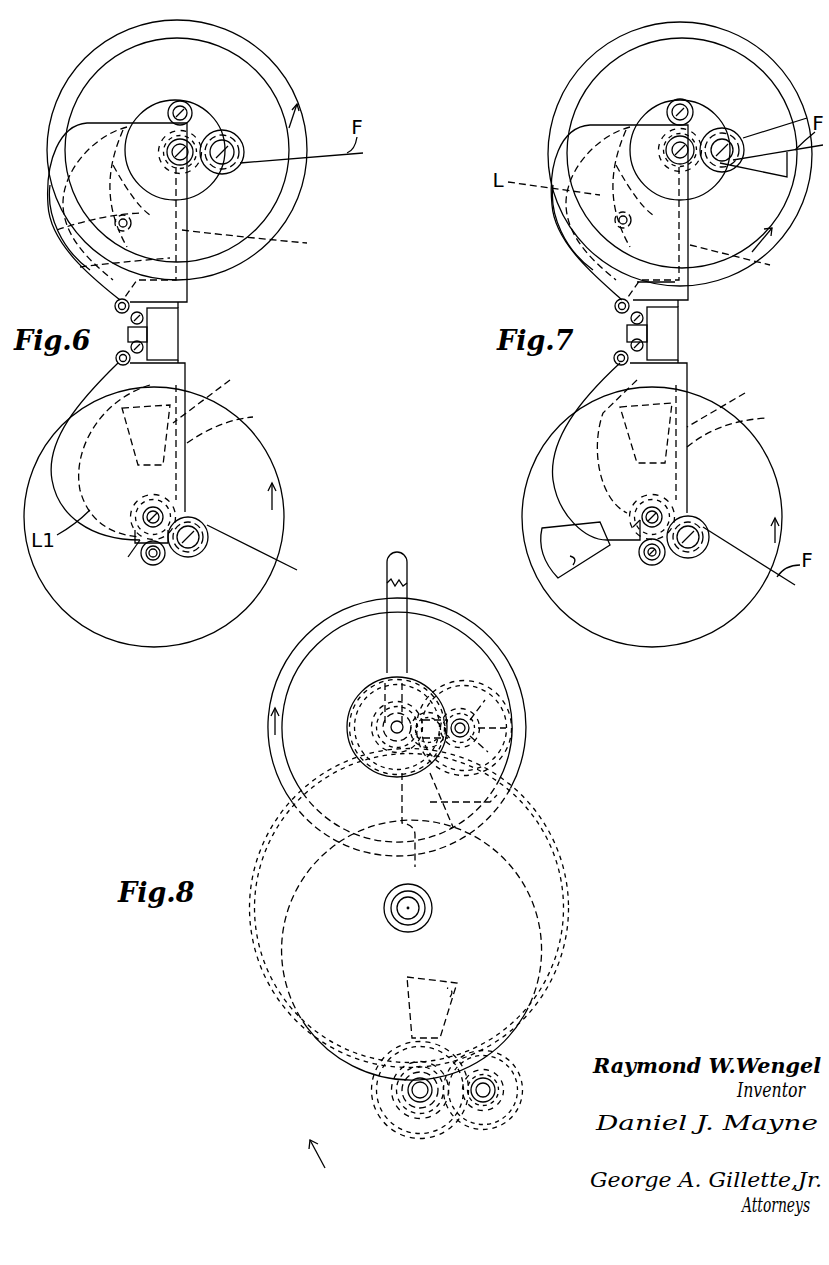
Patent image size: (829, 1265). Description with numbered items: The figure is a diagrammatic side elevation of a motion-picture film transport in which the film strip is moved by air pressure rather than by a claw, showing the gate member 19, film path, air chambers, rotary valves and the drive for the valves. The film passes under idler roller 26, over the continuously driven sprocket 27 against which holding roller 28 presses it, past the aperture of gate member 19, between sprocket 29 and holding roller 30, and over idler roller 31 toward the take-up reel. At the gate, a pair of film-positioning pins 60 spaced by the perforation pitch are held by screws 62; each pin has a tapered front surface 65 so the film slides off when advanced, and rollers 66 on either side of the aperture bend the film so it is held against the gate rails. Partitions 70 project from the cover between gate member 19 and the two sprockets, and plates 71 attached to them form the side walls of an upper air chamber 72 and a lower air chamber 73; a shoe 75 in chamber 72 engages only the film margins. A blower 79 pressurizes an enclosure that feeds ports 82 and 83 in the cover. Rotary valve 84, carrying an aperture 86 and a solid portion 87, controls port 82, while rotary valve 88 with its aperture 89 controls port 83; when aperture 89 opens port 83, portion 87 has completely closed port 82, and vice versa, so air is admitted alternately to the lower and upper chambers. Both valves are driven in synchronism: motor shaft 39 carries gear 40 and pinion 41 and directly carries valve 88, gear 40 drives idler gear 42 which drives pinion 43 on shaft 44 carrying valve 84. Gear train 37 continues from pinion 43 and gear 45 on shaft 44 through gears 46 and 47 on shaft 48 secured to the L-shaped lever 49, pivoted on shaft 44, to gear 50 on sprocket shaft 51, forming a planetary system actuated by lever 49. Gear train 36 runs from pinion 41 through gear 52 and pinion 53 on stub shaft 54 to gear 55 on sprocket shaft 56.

In FIG. 6, the gate member 19 is at (178, 338).
In FIG. 7, the gate member 19 is at (683, 342).
In FIG. 6, the idler roller 26 is at (238, 137).
In FIG. 7, the idler roller 26 is at (730, 137).
In FIG. 6, the sprocket 27 is at (193, 142).
In FIG. 7, the sprocket 27 is at (693, 140).
In FIG. 6, the holding roller 28 is at (187, 107).
In FIG. 7, the holding roller 28 is at (690, 107).
In FIG. 7, the sprocket 29 is at (648, 558).
In FIG. 6, the holding roller 30 is at (153, 567).
In FIG. 7, the holding roller 30 is at (657, 560).
In FIG. 6, the idler roller 31 is at (200, 553).
In FIG. 7, the idler roller 31 is at (703, 522).
In FIG. 8, the gear train 36 is at (367, 1097).
In FIG. 8, the gear train 37 is at (433, 680).
In FIG. 8, the motor shaft 39 is at (420, 1093).
In FIG. 8, the gear 40 is at (427, 1113).
In FIG. 8, the pinion 41 is at (382, 1117).
In FIG. 8, the idler gear 42 is at (567, 892).
In FIG. 8, the pinion 43 is at (373, 727).
In FIG. 8, the shaft 44 is at (388, 713).
In FIG. 8, the gear 45 is at (407, 680).
In FIG. 8, the gear 46 is at (507, 737).
In FIG. 8, the gear 47 is at (510, 697).
In FIG. 8, the shaft 48 is at (507, 763).
In FIG. 8, the L-shaped lever 49 is at (397, 630).
In FIG. 8, the gear 50 is at (353, 697).
In FIG. 6, the sprocket shaft 51 is at (213, 192).
In FIG. 7, the sprocket shaft 51 is at (687, 170).
In FIG. 8, the gear 52 is at (530, 1118).
In FIG. 8, the pinion 53 is at (497, 1088).
In FIG. 8, the stub shaft 54 is at (483, 1093).
In FIG. 8, the gear 55 is at (373, 1073).
In FIG. 6, the sprocket shaft 56 is at (128, 557).
In FIG. 7, the sprocket shaft 56 is at (633, 527).
In FIG. 7, the film-positioning pins 60 is at (627, 320).
In FIG. 6, the screws 62 is at (150, 335).
In FIG. 7, the screws 62 is at (665, 340).
In FIG. 6, the front surface 65 is at (128, 335).
In FIG. 6, the rollers 66 is at (115, 305).
In FIG. 7, the rollers 66 is at (612, 305).
In FIG. 6, the partitions 70 is at (253, 417).
In FIG. 7, the partitions 70 is at (742, 346).
In FIG. 6, the plates 71 is at (55, 192).
In FIG. 7, the plates 71 is at (552, 210).
In FIG. 6, the air chamber 72 is at (53, 213).
In FIG. 7, the air chamber 72 is at (552, 225).
In FIG. 6, the air chamber 73 is at (53, 467).
In FIG. 7, the air chamber 73 is at (550, 473).
In FIG. 6, the shoe 75 is at (113, 165).
In FIG. 7, the shoe 75 is at (560, 160).
In FIG. 6, the blower 79 is at (167, 487).
In FIG. 7, the blower 79 is at (652, 517).
In FIG. 6, the port 82 is at (80, 267).
In FIG. 7, the port 82 is at (640, 290).
In FIG. 8, the port 82 is at (417, 865).
In FIG. 6, the port 83 is at (230, 382).
In FIG. 7, the port 83 is at (729, 403).
In FIG. 8, the port 83 is at (452, 1003).
In FIG. 6, the rotary valve 84 is at (272, 70).
In FIG. 7, the rotary valve 84 is at (680, 154).
In FIG. 8, the rotary valve 84 is at (280, 767).
In FIG. 6, the aperture 86 is at (272, 200).
In FIG. 7, the aperture 86 is at (580, 95).
In FIG. 8, the aperture 86 is at (293, 687).
In FIG. 6, the solid portion 87 is at (57, 230).
In FIG. 7, the solid portion 87 is at (763, 142).
In FIG. 8, the solid portion 87 is at (497, 802).
In FIG. 6, the rotary valve 88 is at (130, 627).
In FIG. 7, the rotary valve 88 is at (725, 615).
In FIG. 8, the rotary valve 88 is at (302, 1062).
In FIG. 6, the aperture 89 is at (125, 450).
In FIG. 7, the aperture 89 is at (580, 563).
In FIG. 8, the aperture 89 is at (433, 978).